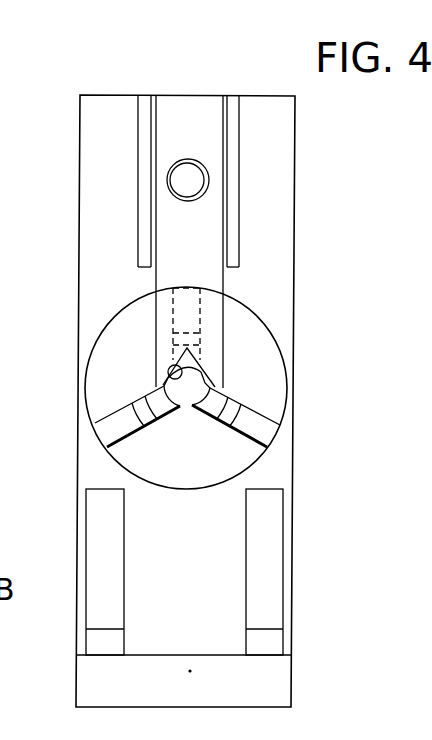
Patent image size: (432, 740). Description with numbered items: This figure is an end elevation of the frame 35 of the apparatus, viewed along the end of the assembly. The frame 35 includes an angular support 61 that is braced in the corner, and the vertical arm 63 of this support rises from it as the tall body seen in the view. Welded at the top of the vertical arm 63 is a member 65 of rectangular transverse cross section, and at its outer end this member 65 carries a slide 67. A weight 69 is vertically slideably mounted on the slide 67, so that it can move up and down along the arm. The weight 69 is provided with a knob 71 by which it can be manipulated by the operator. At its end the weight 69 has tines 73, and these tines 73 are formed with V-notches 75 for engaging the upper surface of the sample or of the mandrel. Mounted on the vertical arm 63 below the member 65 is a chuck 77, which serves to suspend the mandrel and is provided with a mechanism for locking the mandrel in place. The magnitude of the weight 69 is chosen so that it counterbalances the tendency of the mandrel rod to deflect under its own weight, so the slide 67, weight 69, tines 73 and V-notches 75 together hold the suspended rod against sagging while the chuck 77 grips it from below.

The frame 35 is at (75, 152).
The angular support 61 is at (93, 685).
The vertical arm 63 is at (92, 468).
The member 65 is at (232, 123).
The slide 67 is at (157, 124).
The weight 69 is at (218, 161).
The knob 71 is at (183, 190).
The tines 73 is at (213, 345).
The V-notches 75 is at (167, 379).
The chuck 77 is at (183, 477).